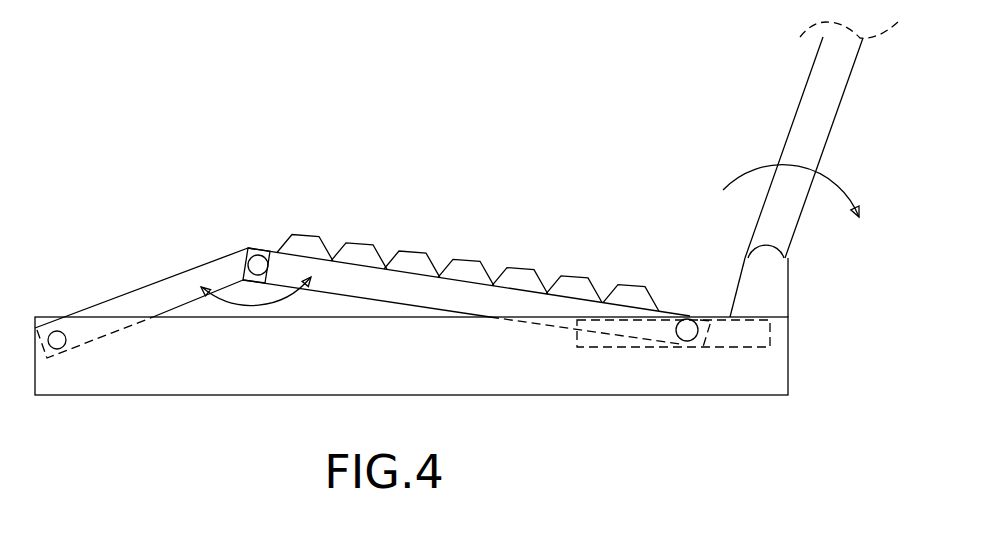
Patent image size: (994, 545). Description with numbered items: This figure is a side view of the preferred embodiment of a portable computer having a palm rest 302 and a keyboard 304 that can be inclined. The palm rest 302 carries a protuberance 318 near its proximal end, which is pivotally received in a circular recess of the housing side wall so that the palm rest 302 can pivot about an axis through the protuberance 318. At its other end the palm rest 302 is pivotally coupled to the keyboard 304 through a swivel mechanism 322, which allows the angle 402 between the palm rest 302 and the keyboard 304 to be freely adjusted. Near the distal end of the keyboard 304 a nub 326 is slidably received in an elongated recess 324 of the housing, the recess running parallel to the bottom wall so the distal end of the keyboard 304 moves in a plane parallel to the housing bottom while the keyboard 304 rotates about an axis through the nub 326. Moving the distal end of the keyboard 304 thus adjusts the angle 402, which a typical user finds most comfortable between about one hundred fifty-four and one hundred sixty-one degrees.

The protuberance 318 is at (60, 331).
The palm rest 302 is at (162, 308).
The swivel mechanism 322 is at (258, 255).
The keyboard 304 is at (535, 298).
The nub 326 is at (687, 319).
The elongated recess 324 is at (738, 337).
The angle 402 is at (257, 307).